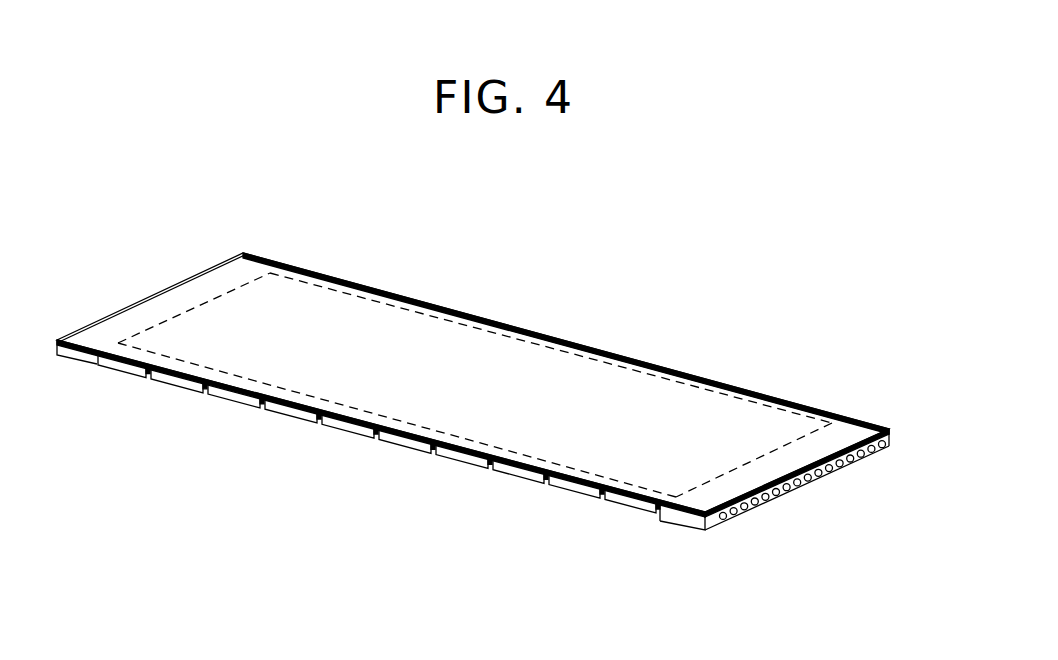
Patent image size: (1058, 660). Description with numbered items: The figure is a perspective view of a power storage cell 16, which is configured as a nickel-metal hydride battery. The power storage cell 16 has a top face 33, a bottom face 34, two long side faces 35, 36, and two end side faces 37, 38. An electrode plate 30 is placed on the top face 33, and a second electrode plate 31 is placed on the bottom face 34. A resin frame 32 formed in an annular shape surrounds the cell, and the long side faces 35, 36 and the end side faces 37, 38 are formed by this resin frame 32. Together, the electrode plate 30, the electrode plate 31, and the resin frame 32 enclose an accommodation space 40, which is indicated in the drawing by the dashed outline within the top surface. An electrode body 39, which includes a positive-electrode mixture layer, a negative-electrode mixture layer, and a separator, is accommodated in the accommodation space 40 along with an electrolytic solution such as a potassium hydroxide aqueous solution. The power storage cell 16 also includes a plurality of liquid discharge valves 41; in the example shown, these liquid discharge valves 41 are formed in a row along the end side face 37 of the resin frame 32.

The power storage cell 16 is at (671, 272).
The electrode plate 30 is at (298, 300).
The electrode plate 31 is at (482, 476).
The resin frame 32 is at (883, 425).
The top face 33 is at (672, 405).
The bottom face 34 is at (565, 503).
The long side face 35 is at (365, 440).
The long side face 36 is at (370, 288).
The end side face 37 is at (892, 441).
The end side face 38 is at (150, 297).
The electrode body 39 is at (530, 340).
The accommodation space 40 is at (244, 265).
The liquid discharge valves 41 is at (768, 508).